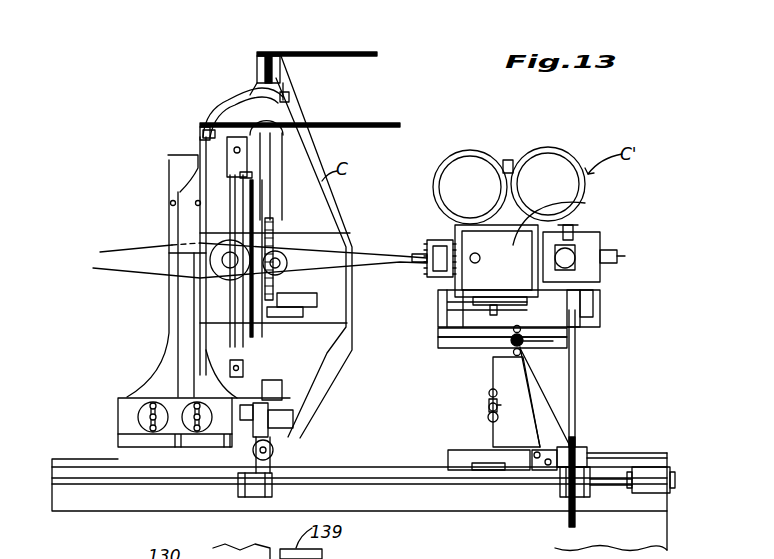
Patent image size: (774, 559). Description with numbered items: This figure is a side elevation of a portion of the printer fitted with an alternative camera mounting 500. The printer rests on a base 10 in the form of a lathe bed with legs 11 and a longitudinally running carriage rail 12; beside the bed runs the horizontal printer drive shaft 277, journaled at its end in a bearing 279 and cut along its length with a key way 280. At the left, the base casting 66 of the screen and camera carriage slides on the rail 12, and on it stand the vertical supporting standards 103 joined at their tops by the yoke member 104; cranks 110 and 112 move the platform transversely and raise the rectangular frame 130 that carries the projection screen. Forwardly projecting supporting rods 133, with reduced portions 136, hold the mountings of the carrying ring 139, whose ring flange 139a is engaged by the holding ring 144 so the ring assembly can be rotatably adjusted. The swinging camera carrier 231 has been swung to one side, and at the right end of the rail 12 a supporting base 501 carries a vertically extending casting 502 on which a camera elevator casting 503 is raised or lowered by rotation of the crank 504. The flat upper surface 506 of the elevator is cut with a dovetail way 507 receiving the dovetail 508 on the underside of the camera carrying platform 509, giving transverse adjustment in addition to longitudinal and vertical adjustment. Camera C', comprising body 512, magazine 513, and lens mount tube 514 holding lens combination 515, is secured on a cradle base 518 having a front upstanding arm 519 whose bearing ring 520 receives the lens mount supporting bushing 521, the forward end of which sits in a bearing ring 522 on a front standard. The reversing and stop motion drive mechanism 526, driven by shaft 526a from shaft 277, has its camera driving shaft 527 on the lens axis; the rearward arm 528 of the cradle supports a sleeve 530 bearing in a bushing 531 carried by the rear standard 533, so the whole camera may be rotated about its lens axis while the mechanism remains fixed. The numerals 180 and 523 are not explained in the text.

The base 10 is at (70, 456).
The legs 11 is at (650, 533).
The carriage rail 12 is at (378, 432).
The base casting 66 is at (128, 460).
The supporting standard 103 is at (175, 317).
The yoke member 104 is at (227, 104).
The operating crank 110 is at (153, 432).
The operating crank 112 is at (197, 432).
The rectangular frame 130 is at (178, 165).
The supporting rod 133 is at (228, 551).
The reduced portion 136 is at (376, 552).
The carrying ring 139 is at (237, 298).
The ring flange 139a is at (300, 558).
The holding ring 144 is at (279, 550).
The stop 180 is at (245, 523).
The swinging camera carrier 231 is at (366, 357).
The printer drive shaft 277 is at (415, 487).
The bearing 279 is at (650, 480).
The key way 280 is at (458, 500).
The alternative camera mounting 500 is at (490, 370).
The supporting base 501 is at (460, 450).
The vertically extending casting 502 is at (507, 426).
The camera elevator casting 503 is at (560, 382).
The crank 504 is at (489, 407).
The flat upper surface 506 is at (442, 345).
The dovetail way 507 is at (540, 375).
The dovetail 508 is at (580, 367).
The camera carrying platform 509 is at (437, 335).
The camera body 512 is at (583, 202).
The magazine 513 is at (471, 166).
The lens mount tube 514 is at (429, 252).
The lens combination 515 is at (427, 259).
The cradle base 518 is at (447, 313).
The upstanding arm 519 is at (428, 270).
The bearing ring 520 is at (428, 247).
The lens mount supporting bushing 521 is at (431, 247).
The bearing ring 522 is at (430, 241).
The bracket 523 is at (447, 303).
The reversing and stop motion drive mechanism 526 is at (597, 237).
The shaft 526a is at (575, 401).
The camera driving shaft 527 is at (577, 222).
The rearward arm 528 is at (607, 283).
The sleeve 530 is at (620, 257).
The bushing 531 is at (603, 252).
The standard 533 is at (600, 308).